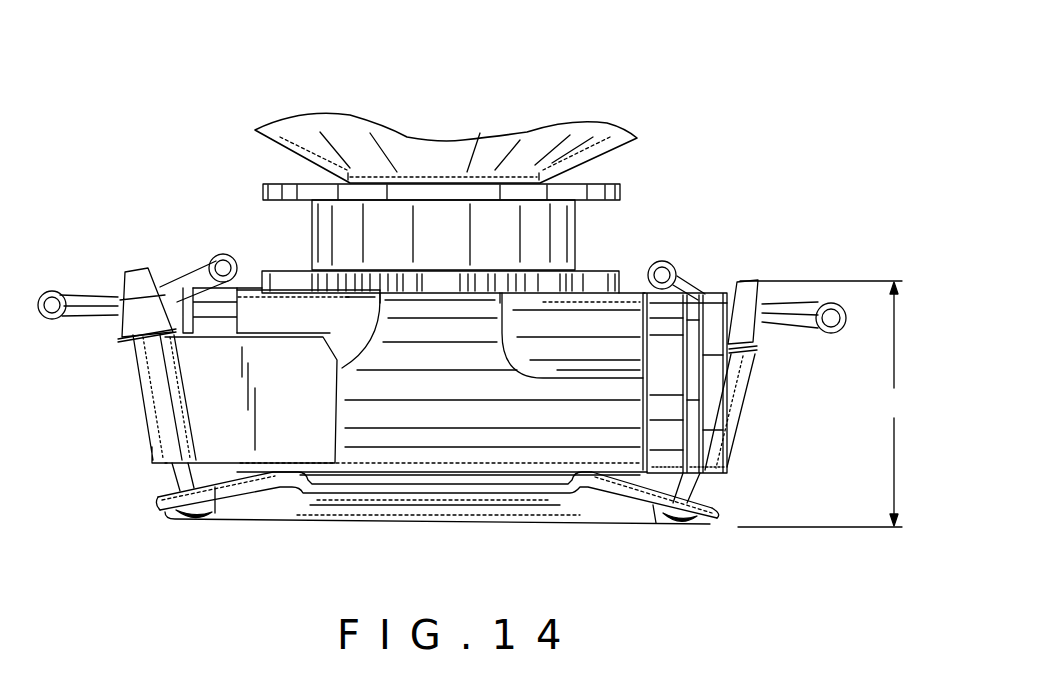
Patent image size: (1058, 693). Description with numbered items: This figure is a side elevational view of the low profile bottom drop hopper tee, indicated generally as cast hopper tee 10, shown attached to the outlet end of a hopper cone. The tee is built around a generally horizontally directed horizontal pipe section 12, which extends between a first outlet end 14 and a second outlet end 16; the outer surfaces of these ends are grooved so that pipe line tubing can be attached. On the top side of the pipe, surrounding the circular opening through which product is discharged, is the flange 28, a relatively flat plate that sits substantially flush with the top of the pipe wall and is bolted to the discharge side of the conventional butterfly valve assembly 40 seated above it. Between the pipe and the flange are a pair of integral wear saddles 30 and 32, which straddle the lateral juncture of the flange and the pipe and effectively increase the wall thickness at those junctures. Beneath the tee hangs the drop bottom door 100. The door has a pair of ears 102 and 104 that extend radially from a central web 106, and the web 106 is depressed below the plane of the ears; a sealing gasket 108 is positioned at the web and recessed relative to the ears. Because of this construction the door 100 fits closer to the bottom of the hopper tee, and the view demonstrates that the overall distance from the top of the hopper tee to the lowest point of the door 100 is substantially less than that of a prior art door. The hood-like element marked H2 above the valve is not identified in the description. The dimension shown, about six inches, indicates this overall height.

The cast hopper tee 10 is at (185, 245).
The horizontal pipe section 12 is at (567, 418).
The first outlet end 14 is at (723, 462).
The second outlet end 16 is at (152, 458).
The flange 28 is at (583, 280).
The wear saddle 30 is at (537, 323).
The wear saddle 32 is at (347, 330).
The butterfly valve assembly 40 is at (447, 238).
The flexible hood H2 is at (517, 158).
The drop bottom door 100 is at (285, 522).
The ear 102 is at (717, 513).
The ear 104 is at (153, 498).
The central web 106 is at (463, 522).
The sealing gasket 108 is at (543, 502).